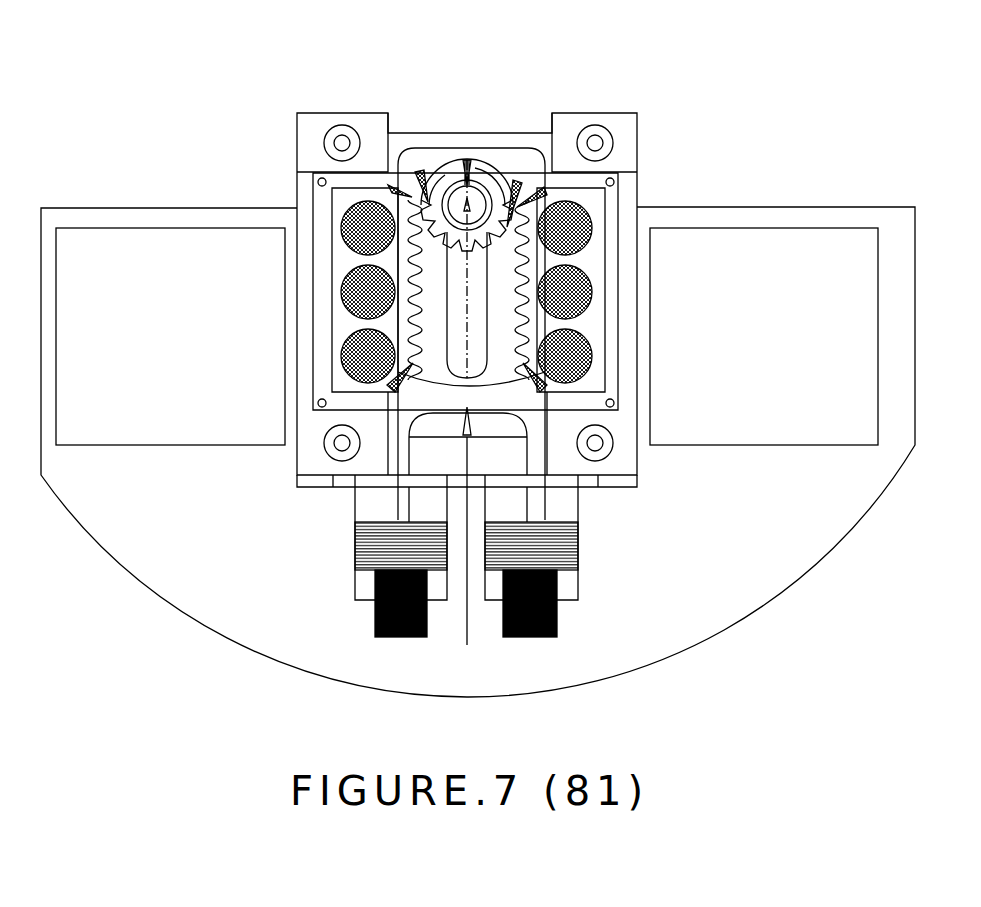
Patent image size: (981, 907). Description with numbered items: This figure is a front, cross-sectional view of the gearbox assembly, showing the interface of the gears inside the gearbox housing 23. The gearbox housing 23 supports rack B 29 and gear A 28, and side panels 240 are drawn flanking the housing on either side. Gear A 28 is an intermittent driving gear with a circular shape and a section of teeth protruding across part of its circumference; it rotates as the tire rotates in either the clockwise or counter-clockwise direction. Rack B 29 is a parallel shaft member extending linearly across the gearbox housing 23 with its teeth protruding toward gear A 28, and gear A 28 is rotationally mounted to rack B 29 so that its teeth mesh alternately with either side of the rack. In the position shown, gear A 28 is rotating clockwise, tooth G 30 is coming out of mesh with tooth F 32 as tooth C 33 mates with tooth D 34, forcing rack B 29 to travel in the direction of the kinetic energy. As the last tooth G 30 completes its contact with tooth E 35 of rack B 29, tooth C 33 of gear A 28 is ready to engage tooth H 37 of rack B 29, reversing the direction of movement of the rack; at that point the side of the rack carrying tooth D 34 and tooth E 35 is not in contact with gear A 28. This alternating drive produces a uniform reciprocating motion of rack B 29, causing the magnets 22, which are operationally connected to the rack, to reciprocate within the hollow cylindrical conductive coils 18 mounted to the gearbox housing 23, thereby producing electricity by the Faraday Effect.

The gear A 28 is at (467, 160).
The rack B 29 is at (466, 436).
The tooth G 30 is at (517, 182).
The tooth F 32 is at (545, 191).
The tooth C 33 is at (422, 172).
The tooth D 34 is at (390, 189).
The tooth E 35 is at (390, 388).
The tooth H 37 is at (544, 388).
The gearbox housing 23 is at (648, 196).
The side panel 240 is at (171, 347).
The conductive coils 18 is at (355, 546).
The magnets 22 is at (375, 606).